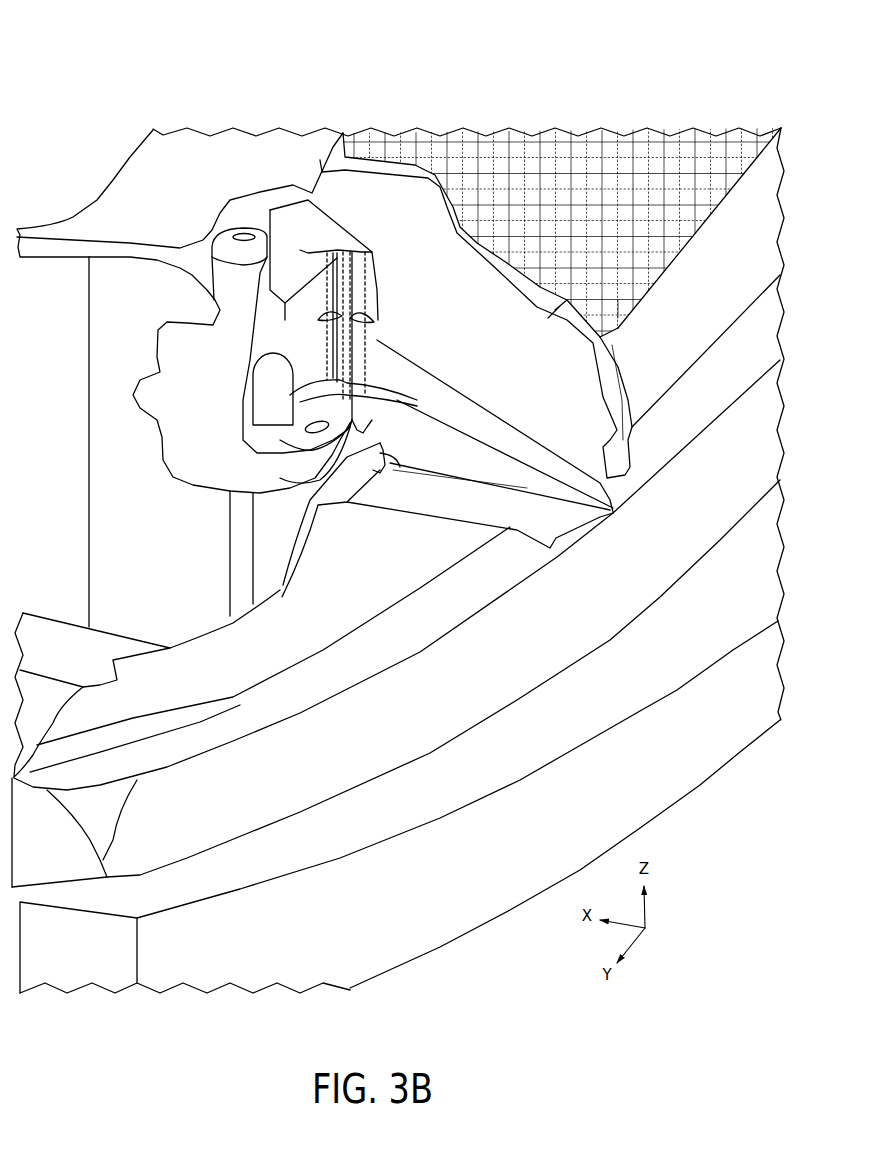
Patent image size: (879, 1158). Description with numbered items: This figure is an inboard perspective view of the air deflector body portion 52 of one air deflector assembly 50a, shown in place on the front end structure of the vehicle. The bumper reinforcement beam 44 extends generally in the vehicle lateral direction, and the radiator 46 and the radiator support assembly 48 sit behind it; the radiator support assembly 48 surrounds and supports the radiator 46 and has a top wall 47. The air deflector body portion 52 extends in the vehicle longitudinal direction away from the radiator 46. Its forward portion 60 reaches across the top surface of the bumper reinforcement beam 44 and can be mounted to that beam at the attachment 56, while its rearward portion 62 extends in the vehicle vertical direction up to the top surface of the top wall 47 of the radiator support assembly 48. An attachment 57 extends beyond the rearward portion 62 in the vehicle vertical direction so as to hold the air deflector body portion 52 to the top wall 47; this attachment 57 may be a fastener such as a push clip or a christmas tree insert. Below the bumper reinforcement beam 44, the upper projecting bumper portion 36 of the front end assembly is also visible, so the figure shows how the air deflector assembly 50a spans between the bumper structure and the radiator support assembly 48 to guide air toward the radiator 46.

The upper projecting bumper portion 36 is at (191, 957).
The bumper reinforcement beam 44 is at (677, 508).
The radiator 46 is at (620, 281).
The top wall 47 is at (300, 187).
The radiator support assembly 48 is at (221, 84).
The air deflector assembly 50a is at (576, 208).
The air deflector body portion 52 is at (505, 248).
The attachment 56 is at (553, 547).
The attachment 57 is at (300, 262).
The forward portion 60 is at (645, 362).
The rearward portion 62 is at (453, 166).